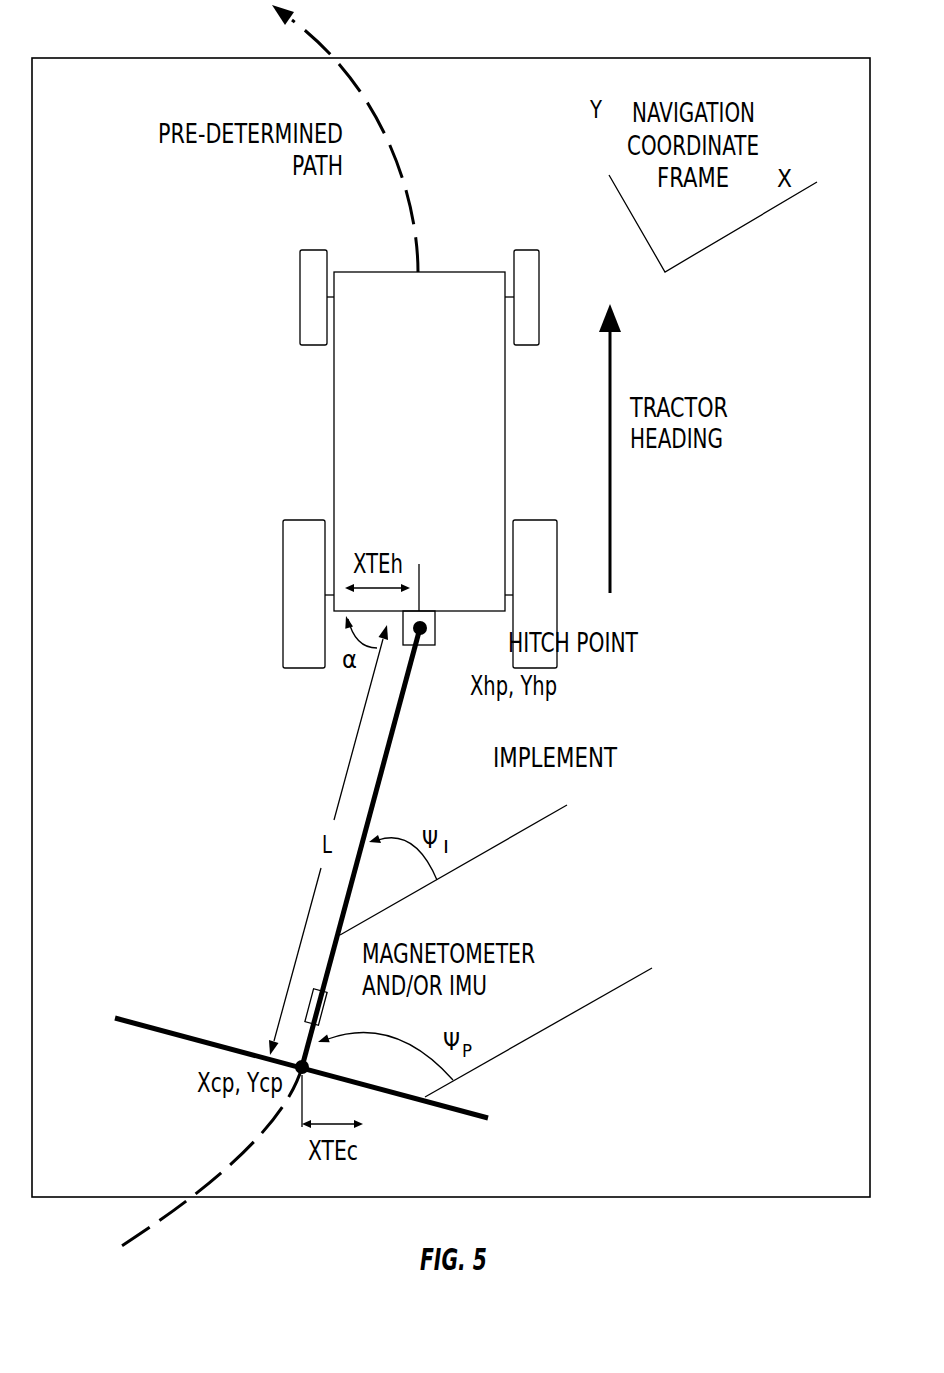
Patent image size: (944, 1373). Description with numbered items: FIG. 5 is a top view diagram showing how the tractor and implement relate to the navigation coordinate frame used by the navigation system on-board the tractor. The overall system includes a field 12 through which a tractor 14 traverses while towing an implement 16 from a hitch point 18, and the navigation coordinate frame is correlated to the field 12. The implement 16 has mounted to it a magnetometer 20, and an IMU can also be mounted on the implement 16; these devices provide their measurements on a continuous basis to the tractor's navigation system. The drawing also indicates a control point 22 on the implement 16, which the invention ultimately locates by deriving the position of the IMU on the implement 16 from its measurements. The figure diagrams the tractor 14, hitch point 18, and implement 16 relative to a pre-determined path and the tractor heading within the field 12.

The field 12 is at (767, 73).
The tractor 14 is at (514, 409).
The implement 16 is at (403, 755).
The hitch point 18 is at (435, 627).
The magnetometer 20 is at (330, 1007).
The implement control point 22 is at (316, 1065).